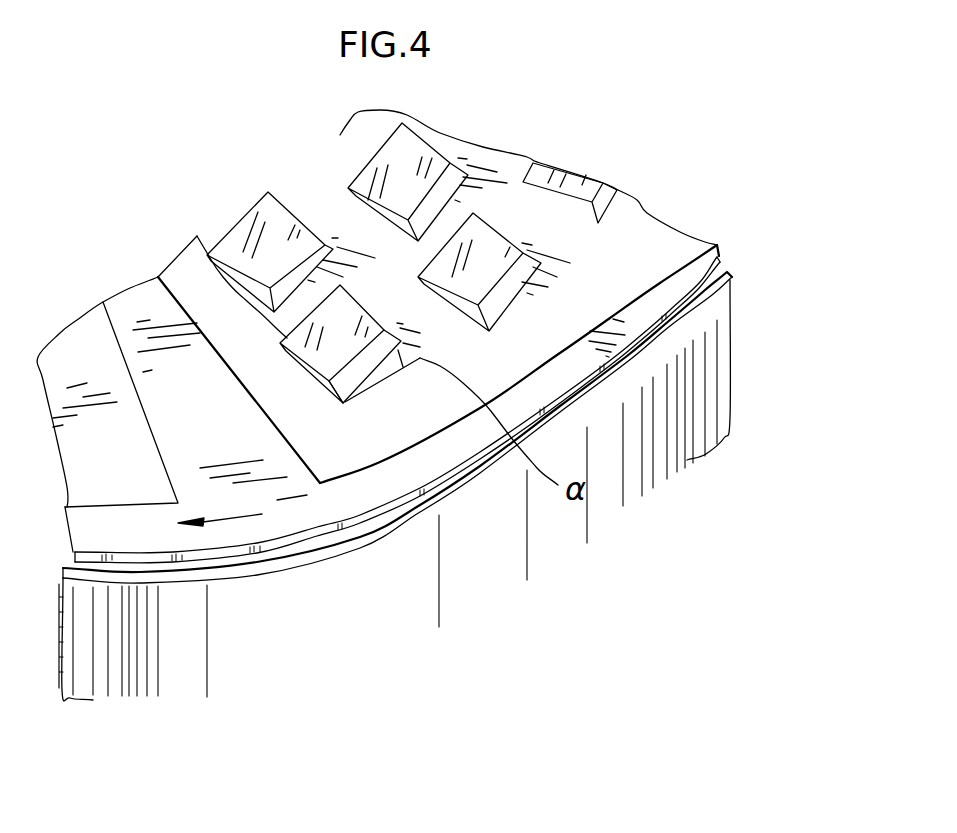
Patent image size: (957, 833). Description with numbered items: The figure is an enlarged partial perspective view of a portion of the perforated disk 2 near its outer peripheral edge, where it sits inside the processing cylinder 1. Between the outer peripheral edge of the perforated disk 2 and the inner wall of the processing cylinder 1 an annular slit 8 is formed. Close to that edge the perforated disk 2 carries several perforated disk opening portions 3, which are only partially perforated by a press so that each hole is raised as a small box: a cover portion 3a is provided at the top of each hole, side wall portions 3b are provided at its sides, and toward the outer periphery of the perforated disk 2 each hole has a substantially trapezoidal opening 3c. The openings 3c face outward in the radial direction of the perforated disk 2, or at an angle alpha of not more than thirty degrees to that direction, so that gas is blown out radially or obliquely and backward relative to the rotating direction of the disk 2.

The processing cylinder 1 is at (713, 327).
The perforated disk 2 is at (277, 520).
The perforated disk opening portions 3 is at (632, 243).
The cover portion 3a is at (200, 242).
The side wall portions 3b is at (340, 398).
The substantially trapezoidal opening 3c is at (347, 405).
The annular slit 8 is at (640, 368).